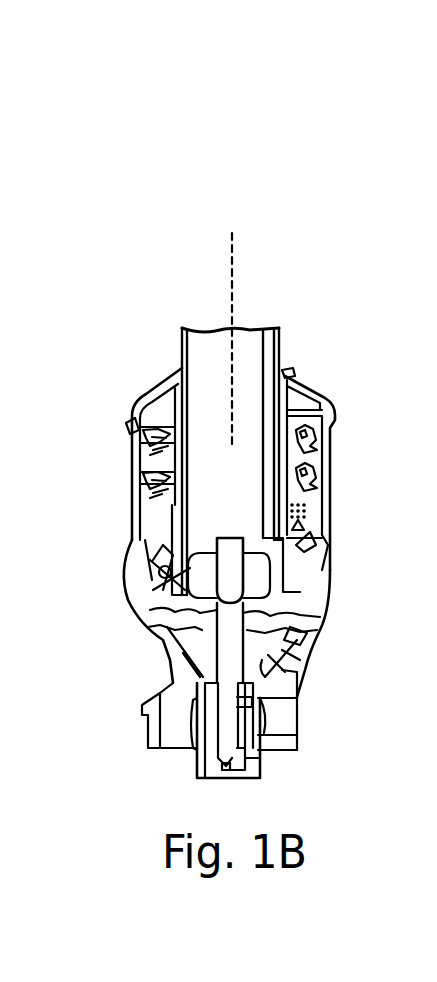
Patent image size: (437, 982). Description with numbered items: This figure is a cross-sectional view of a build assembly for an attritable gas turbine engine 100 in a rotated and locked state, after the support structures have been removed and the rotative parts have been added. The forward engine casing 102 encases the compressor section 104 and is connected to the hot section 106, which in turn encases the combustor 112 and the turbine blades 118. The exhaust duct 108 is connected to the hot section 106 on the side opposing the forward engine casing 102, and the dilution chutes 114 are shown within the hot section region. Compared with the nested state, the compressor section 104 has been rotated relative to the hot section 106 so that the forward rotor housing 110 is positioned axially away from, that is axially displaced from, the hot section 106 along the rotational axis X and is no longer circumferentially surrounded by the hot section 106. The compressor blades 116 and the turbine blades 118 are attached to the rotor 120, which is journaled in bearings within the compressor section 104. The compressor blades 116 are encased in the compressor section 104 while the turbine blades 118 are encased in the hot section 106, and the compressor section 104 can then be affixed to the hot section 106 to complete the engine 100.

The gas turbine engine 100 is at (183, 305).
The forward engine casing 102 is at (153, 643).
The compressor section 104 is at (305, 732).
The hot section 106 is at (132, 450).
The exhaust duct 108 is at (282, 340).
The forward rotor housing 110 is at (241, 765).
The combustor 112 is at (316, 462).
The dilution chutes 114 is at (316, 477).
The compressor blades 116 is at (298, 648).
The turbine blades 118 is at (200, 570).
The rotor 120 is at (232, 740).
The rotational axis X is at (233, 252).